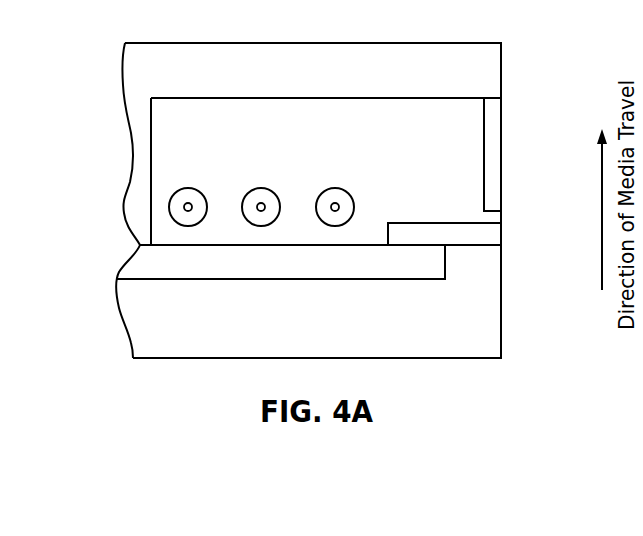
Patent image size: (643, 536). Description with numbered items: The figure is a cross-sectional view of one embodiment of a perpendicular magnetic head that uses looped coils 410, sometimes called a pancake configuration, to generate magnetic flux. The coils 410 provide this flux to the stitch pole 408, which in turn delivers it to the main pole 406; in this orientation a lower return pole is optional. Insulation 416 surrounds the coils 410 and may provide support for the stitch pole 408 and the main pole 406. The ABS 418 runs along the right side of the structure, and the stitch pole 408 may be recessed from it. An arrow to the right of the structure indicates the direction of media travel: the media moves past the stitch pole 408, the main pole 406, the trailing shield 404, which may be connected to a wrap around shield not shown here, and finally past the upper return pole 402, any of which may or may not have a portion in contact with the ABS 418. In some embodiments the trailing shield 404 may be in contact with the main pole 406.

The upper return pole 402 is at (403, 80).
The trailing shield 404 is at (501, 138).
The main pole 406 is at (501, 230).
The stitch pole 408 is at (344, 272).
The looped coils 410 is at (184, 189).
The insulation 416 is at (443, 178).
The ABS 418 is at (510, 60).